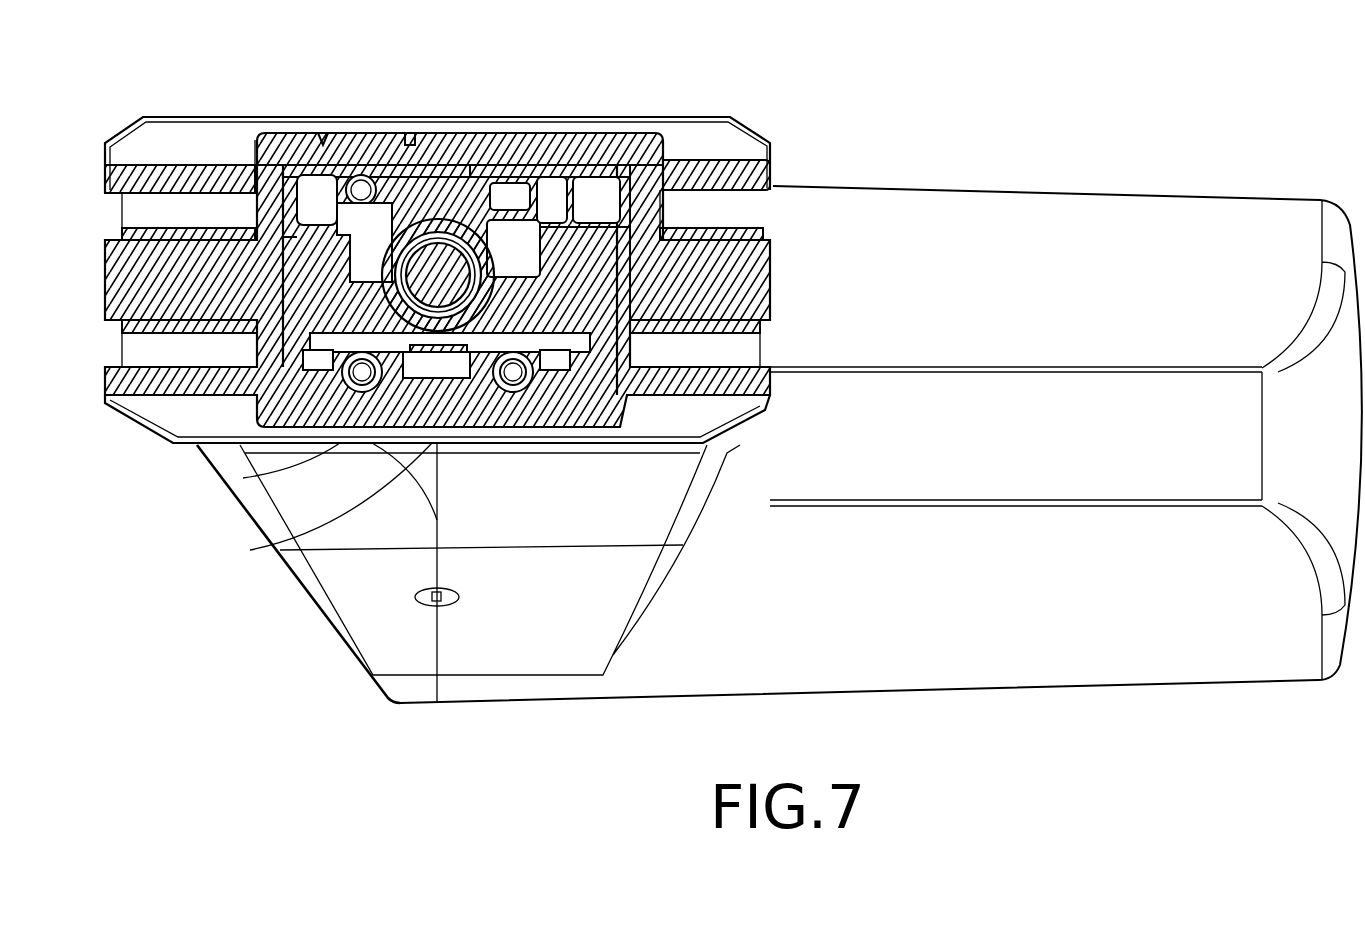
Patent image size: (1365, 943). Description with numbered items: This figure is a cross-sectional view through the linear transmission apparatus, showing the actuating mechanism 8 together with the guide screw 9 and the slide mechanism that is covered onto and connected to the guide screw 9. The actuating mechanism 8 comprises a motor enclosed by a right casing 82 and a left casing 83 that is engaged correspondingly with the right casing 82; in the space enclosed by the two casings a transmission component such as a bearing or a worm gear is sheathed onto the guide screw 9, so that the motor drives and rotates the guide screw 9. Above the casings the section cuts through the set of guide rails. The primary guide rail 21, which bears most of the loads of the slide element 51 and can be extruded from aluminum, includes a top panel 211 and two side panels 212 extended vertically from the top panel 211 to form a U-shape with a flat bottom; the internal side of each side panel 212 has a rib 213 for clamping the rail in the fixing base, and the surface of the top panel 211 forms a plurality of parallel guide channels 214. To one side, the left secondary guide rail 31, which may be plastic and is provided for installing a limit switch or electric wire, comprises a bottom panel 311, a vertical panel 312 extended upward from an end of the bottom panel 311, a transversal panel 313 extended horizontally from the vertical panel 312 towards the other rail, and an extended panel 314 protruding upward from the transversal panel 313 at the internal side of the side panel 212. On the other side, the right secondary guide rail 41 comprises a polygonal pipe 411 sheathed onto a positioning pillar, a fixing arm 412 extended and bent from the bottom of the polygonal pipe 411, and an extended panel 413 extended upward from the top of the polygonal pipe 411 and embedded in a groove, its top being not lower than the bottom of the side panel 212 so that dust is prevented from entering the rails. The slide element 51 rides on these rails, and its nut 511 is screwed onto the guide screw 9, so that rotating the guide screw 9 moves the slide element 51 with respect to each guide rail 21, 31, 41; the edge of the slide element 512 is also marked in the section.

The actuating mechanism 8 is at (297, 658).
The right casing 82 is at (983, 672).
The left casing 83 is at (327, 597).
The guide screw 9 is at (438, 272).
The primary guide rail 21 is at (258, 343).
The top panel 211 is at (340, 450).
The side panel 212 is at (283, 298).
The rib 213 is at (295, 300).
The guide channel 214 is at (305, 544).
The left secondary guide rail 31 is at (527, 140).
The bottom panel 311 is at (478, 150).
The vertical panel 312 is at (663, 185).
The transversal panel 313 is at (683, 233).
The extended panel 314 is at (720, 300).
The right secondary guide rail 41 is at (325, 135).
The polygonal pipe 411 is at (277, 135).
The fixing arm 412 is at (377, 140).
The extended panel 413 is at (182, 228).
The slide element 51 is at (177, 133).
The nut 511 is at (410, 150).
The edge of upper cover 512 is at (335, 555).